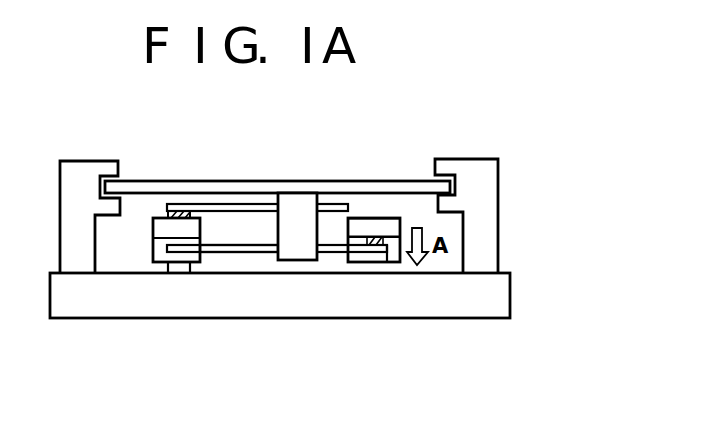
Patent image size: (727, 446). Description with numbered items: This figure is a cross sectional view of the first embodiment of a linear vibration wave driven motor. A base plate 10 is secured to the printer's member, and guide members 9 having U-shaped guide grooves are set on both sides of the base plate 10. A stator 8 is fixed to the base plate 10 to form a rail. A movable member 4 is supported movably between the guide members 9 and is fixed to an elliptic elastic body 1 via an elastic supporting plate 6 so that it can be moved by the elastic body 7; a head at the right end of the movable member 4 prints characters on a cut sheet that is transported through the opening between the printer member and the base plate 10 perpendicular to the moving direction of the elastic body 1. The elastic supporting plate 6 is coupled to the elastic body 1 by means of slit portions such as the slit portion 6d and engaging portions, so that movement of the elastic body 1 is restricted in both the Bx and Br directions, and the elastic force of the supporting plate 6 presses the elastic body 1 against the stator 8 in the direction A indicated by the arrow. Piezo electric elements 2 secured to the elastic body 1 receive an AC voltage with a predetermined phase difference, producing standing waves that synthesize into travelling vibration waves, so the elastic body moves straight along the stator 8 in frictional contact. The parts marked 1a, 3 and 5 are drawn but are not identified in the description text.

The elastic body 1 is at (383, 230).
The contact portion of movable member 1a is at (392, 262).
The piezo electric elements 2 is at (360, 218).
The vibrating plate 3 is at (222, 205).
The movable member 4 is at (265, 188).
The fixing pad 5 is at (177, 210).
The elastic supporting plate 6 is at (327, 254).
The slit portion 6d is at (228, 254).
The elastic body 7 is at (375, 262).
The stator 8 is at (177, 276).
The guide members 9 is at (487, 227).
The base plate 10 is at (477, 290).